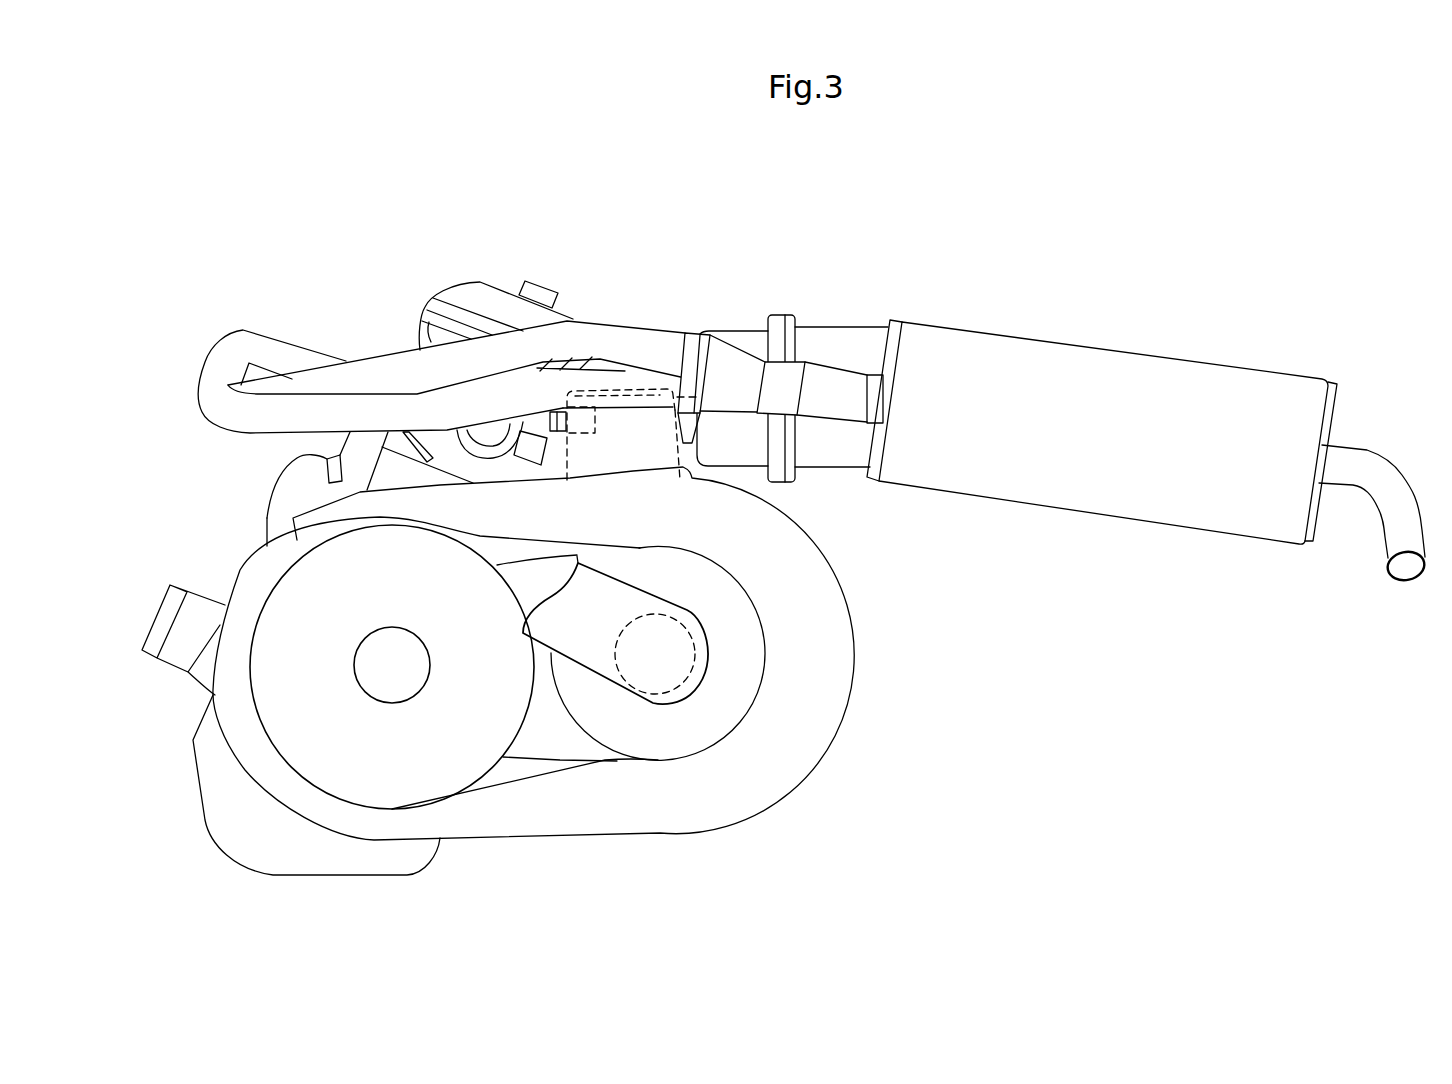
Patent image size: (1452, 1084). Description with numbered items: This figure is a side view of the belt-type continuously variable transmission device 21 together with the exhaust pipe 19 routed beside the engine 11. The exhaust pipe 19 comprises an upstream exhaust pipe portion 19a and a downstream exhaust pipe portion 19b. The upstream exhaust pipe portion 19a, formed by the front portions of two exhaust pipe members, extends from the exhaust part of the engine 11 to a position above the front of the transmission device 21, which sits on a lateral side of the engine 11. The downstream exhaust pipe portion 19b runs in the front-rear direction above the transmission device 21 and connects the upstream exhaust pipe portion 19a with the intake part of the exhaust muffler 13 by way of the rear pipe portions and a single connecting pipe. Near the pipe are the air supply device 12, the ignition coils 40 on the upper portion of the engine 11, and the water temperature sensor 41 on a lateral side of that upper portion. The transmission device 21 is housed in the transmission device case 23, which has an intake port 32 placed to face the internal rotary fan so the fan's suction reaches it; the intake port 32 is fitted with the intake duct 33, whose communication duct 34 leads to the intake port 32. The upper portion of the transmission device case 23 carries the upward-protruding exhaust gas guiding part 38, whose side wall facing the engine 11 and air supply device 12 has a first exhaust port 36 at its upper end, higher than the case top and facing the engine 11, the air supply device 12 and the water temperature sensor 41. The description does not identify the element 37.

The engine 11 is at (467, 293).
The air supply device 12 is at (832, 350).
The exhaust muffler 13 is at (1243, 525).
The exhaust pipe 19 is at (441, 302).
The upstream exhaust pipe portion 19a is at (297, 317).
The downstream exhaust pipe portion 19b is at (600, 317).
The belt-type continuously variable transmission device 21 is at (849, 628).
The transmission device case 23 is at (805, 692).
The intake port 32 is at (671, 667).
The intake duct 33 is at (578, 740).
The communication duct 34 is at (585, 647).
The first exhaust port 36 is at (650, 400).
The connector flange 37 is at (697, 425).
The exhaust gas guiding part 38 is at (630, 447).
The ignition coils 40 is at (535, 290).
The water temperature sensor 41 is at (593, 410).